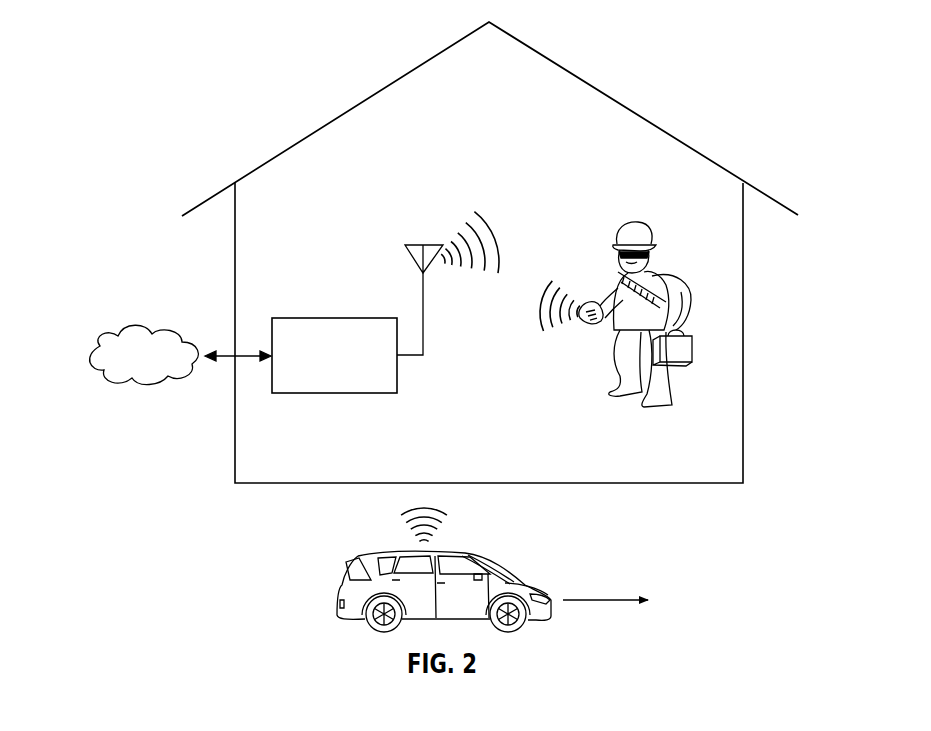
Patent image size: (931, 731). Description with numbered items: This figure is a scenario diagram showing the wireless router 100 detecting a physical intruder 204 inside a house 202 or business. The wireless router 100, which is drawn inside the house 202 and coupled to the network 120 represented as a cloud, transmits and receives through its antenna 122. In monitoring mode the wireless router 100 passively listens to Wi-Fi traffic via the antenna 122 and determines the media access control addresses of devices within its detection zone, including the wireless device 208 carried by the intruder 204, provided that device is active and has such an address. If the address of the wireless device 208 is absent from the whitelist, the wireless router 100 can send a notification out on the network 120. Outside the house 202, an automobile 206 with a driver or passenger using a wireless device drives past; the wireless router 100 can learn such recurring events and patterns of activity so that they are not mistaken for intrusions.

The wireless router 100 is at (334, 318).
The network 120 is at (143, 330).
The antenna 122 is at (423, 298).
The house 202 is at (336, 118).
The intruder 204 is at (672, 276).
The automobile 206 is at (380, 552).
The wireless device 208 is at (580, 324).